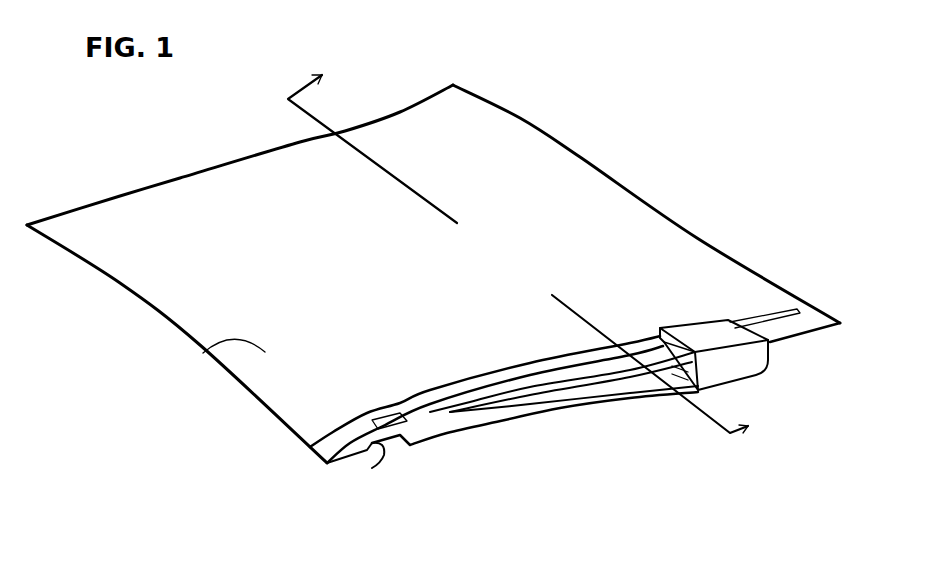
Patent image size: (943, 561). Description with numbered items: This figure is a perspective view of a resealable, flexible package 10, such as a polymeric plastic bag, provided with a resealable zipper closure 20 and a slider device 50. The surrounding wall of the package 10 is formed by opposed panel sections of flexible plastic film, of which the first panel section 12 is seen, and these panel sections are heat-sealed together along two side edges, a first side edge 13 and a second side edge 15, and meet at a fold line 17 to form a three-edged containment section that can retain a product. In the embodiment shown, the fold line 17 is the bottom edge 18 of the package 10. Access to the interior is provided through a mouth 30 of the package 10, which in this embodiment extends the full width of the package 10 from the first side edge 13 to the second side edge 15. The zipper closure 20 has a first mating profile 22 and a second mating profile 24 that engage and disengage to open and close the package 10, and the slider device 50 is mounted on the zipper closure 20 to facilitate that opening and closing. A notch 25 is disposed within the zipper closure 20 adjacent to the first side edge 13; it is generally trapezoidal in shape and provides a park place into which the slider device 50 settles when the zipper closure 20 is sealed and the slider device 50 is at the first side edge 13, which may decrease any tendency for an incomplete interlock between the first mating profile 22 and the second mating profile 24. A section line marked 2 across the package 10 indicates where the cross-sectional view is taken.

The flexible package 10 is at (433, 268).
The first panel section 12 is at (203, 353).
The first side edge 13 is at (163, 323).
The second side edge 15 is at (660, 211).
The fold line 17 is at (354, 121).
The bottom edge 18 is at (235, 152).
The zipper closure 20 is at (575, 427).
The first mating profile 22 is at (530, 382).
The second mating profile 24 is at (613, 392).
The notch 25 is at (378, 462).
The mouth 30 is at (537, 397).
The slider device 50 is at (742, 381).
The section line 2- 2 is at (518, 259).